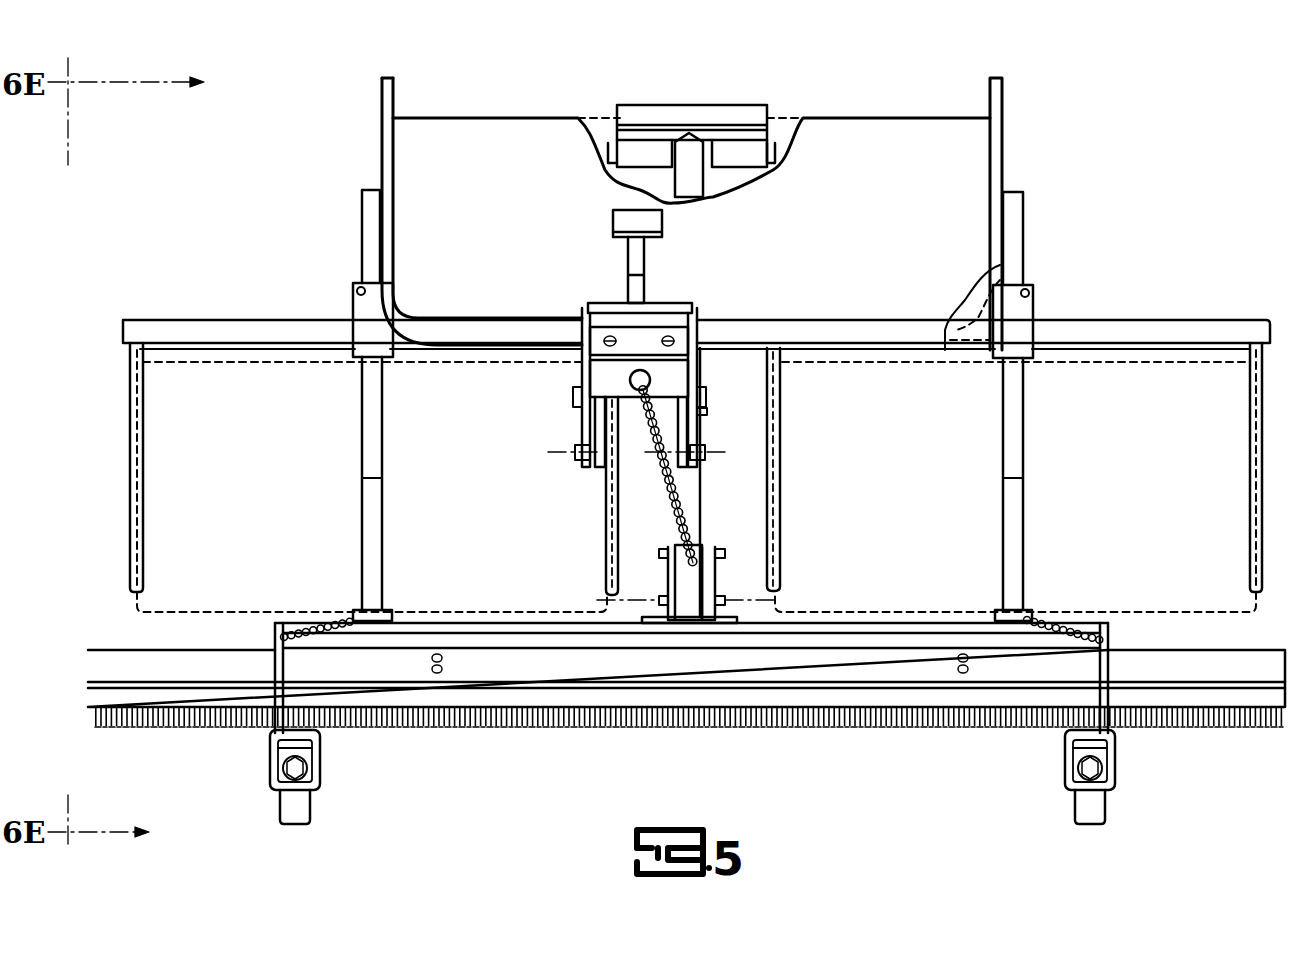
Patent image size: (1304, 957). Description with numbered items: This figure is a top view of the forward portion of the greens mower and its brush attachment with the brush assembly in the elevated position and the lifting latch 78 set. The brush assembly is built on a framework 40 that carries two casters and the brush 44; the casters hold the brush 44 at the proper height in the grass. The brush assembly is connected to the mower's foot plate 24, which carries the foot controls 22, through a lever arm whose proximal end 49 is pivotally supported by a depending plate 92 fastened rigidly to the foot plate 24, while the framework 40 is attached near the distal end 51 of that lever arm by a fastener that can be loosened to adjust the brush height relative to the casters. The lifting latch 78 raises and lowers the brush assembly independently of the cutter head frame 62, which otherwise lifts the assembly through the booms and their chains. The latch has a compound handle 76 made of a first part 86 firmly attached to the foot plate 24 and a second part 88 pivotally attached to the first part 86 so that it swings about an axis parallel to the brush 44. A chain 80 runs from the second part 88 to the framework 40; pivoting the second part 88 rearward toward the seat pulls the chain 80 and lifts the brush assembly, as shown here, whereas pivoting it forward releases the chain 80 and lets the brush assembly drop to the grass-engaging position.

The foot controls 22 is at (633, 220).
The foot plate 24 is at (862, 226).
The framework 40 is at (1110, 700).
The brush 44 is at (1238, 728).
The proximal end of lever arm 49 is at (700, 142).
The distal end of lever arm 51 is at (680, 626).
The cutter head frame 62 is at (1272, 345).
The handle 76 is at (607, 306).
The lifting latch 78 is at (570, 382).
The chain 80 is at (680, 487).
The first part 86 is at (697, 412).
The second part 88 is at (700, 373).
The depending plate 92 is at (660, 338).